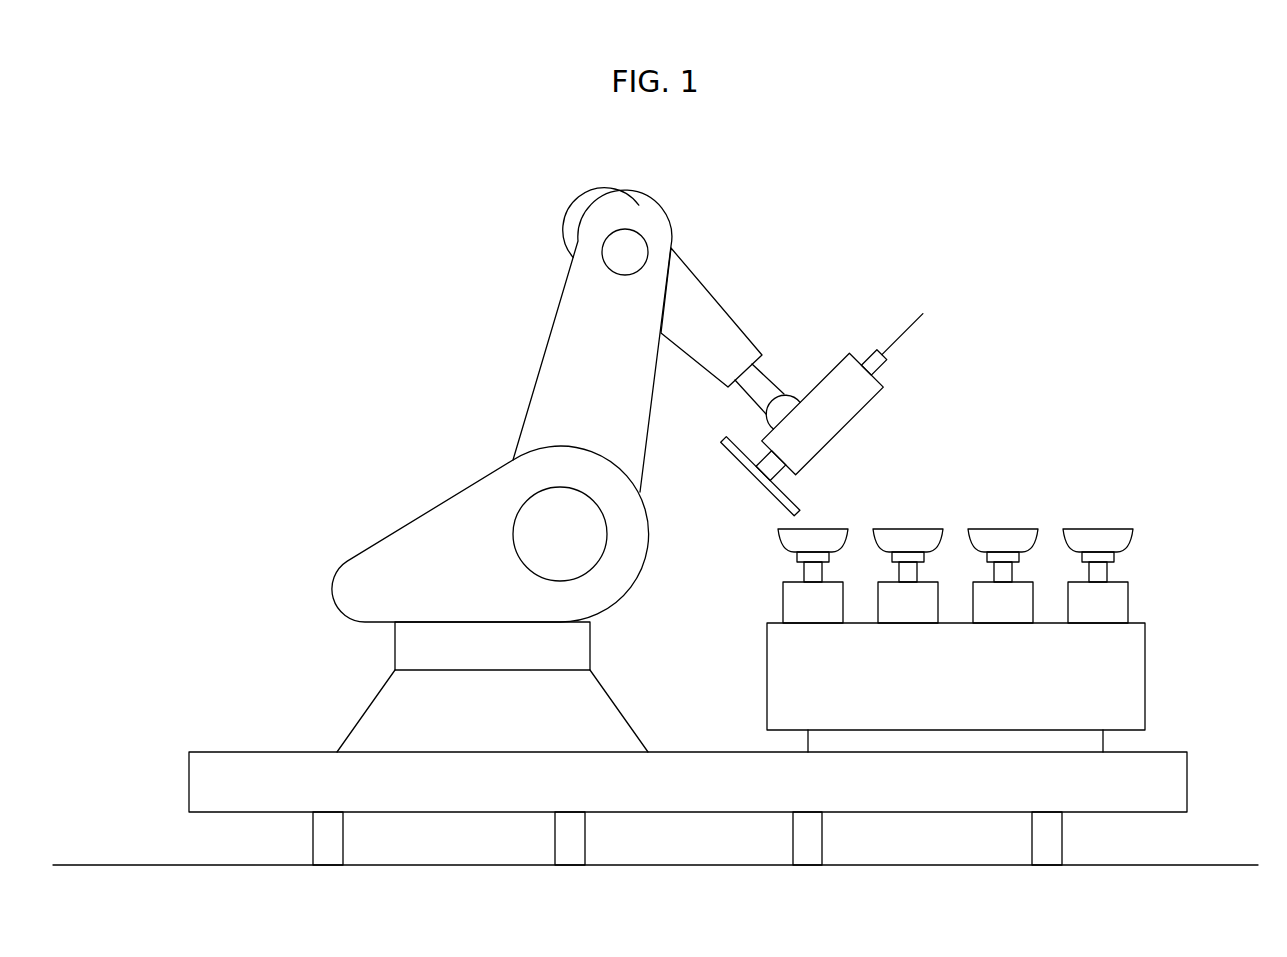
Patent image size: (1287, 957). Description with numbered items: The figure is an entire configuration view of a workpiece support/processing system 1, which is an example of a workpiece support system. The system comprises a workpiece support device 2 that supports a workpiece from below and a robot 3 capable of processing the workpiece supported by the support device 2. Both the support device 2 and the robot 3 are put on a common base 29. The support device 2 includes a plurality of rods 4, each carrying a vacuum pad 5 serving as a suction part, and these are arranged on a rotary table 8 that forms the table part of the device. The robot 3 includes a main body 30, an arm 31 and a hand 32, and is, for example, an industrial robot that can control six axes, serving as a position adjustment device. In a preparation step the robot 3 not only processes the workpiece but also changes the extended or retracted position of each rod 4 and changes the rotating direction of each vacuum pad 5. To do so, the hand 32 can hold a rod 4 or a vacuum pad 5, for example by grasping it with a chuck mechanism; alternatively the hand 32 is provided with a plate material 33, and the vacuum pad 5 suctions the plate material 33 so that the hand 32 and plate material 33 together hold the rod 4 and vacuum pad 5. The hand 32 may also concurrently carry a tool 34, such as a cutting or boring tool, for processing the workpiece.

The workpiece support/processing system 1 is at (1002, 223).
The workpiece support device 2 is at (1155, 483).
The robot 3 is at (676, 208).
The rod 4 is at (783, 599).
The vacuum pad 5 is at (838, 528).
The rotary table 8 is at (1145, 676).
The common base 29 is at (1187, 787).
The main body 30 is at (428, 506).
The arm 31 is at (716, 300).
The hand 32 is at (799, 400).
The plate material 33 is at (747, 468).
The tool 34 is at (907, 330).